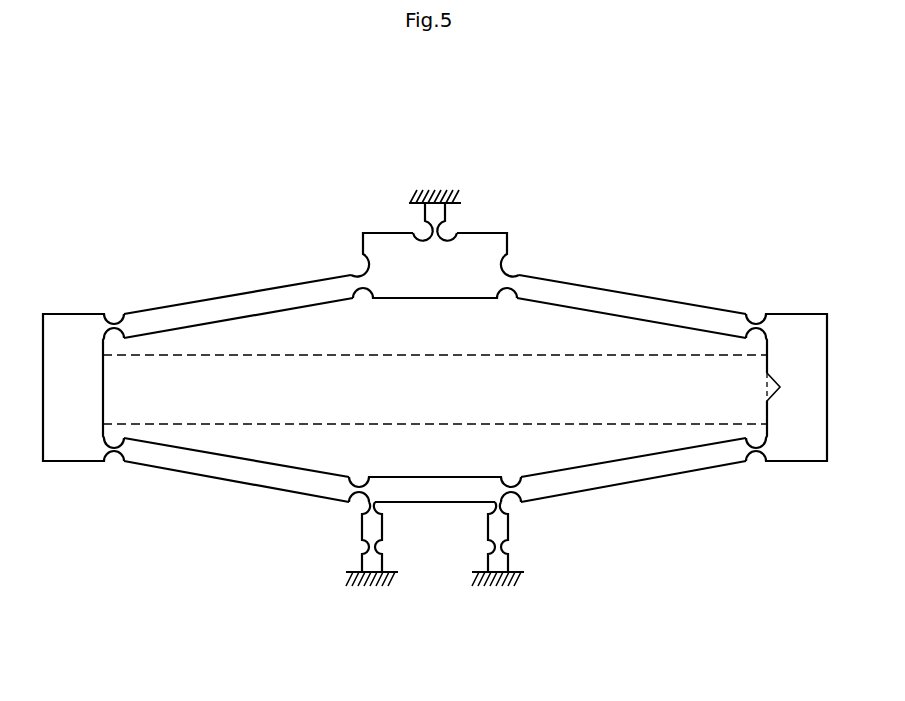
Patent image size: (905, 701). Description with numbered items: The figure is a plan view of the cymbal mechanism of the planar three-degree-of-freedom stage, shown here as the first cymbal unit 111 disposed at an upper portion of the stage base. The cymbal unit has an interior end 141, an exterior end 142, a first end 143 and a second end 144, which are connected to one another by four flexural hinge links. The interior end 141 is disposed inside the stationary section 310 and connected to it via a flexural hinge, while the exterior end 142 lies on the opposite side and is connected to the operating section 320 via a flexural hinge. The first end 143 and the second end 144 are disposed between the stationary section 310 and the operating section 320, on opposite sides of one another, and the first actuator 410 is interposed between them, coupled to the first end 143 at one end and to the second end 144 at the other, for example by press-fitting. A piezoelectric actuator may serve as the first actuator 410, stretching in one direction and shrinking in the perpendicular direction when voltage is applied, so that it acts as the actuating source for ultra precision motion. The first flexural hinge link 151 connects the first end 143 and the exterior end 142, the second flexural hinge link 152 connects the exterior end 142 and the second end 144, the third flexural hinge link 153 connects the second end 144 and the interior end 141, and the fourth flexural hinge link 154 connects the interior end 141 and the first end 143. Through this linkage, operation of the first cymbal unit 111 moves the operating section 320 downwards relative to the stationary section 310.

The first cymbal unit 111 is at (686, 168).
The interior end 141 is at (436, 486).
The exterior end 142 is at (397, 253).
The first end 143 is at (80, 337).
The second end 144 is at (797, 333).
The first flexural hinge link 151 is at (235, 308).
The second flexural hinge link 152 is at (592, 301).
The third flexural hinge link 153 is at (670, 465).
The fourth flexural hinge link 154 is at (248, 468).
The stationary section 310 is at (497, 586).
The operating section 320 is at (441, 189).
The first actuator 410 is at (672, 355).